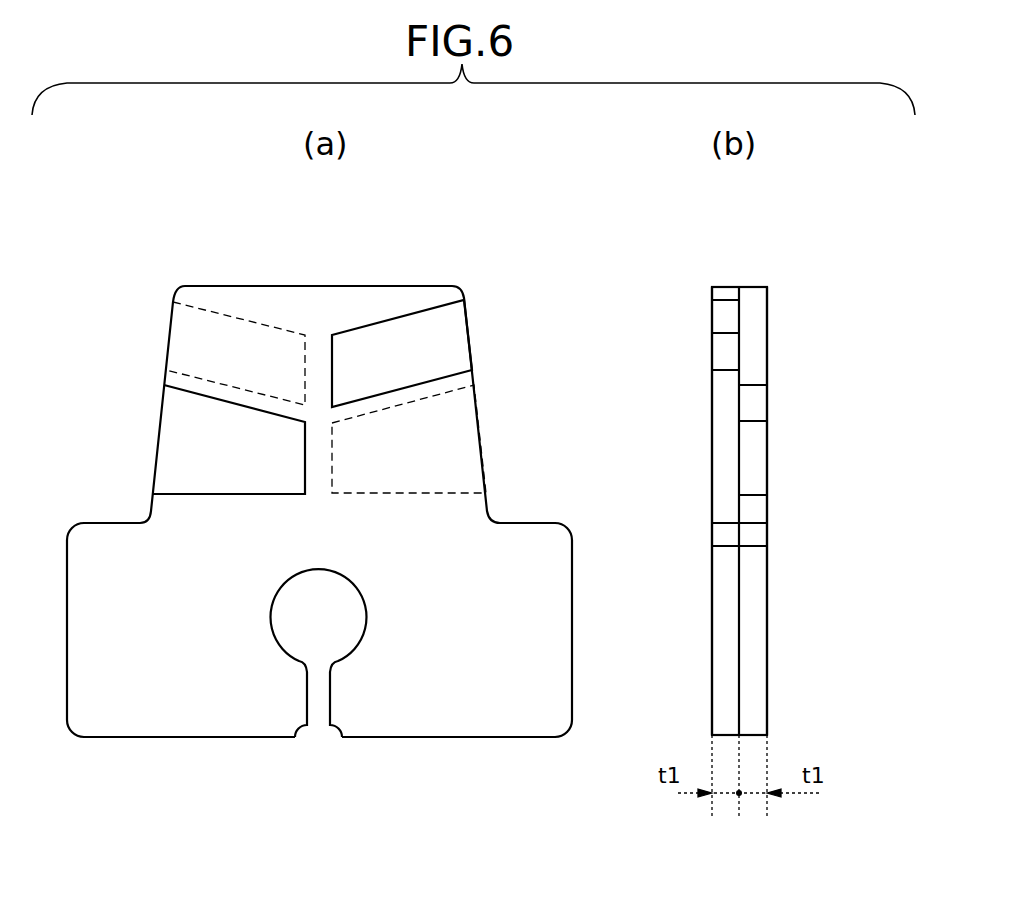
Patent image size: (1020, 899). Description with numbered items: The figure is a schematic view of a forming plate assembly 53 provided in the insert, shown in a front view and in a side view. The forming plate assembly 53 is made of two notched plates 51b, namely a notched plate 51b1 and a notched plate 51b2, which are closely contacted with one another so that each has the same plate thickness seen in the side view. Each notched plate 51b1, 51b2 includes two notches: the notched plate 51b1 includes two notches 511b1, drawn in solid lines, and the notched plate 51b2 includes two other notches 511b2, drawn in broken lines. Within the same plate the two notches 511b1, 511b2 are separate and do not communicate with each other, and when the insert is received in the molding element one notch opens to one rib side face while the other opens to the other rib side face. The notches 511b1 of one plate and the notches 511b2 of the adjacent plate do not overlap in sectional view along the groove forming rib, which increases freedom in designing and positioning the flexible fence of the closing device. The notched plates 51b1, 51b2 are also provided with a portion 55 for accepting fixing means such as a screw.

The forming plate assembly 53 is at (412, 250).
The notched plate 51b is at (200, 282).
The notched plate 51b1 is at (710, 703).
The notched plate 51b2 is at (768, 683).
The notch 511b1 is at (170, 450).
The notch 511b2 is at (198, 345).
The portion for accepting fixing means 55 is at (333, 619).